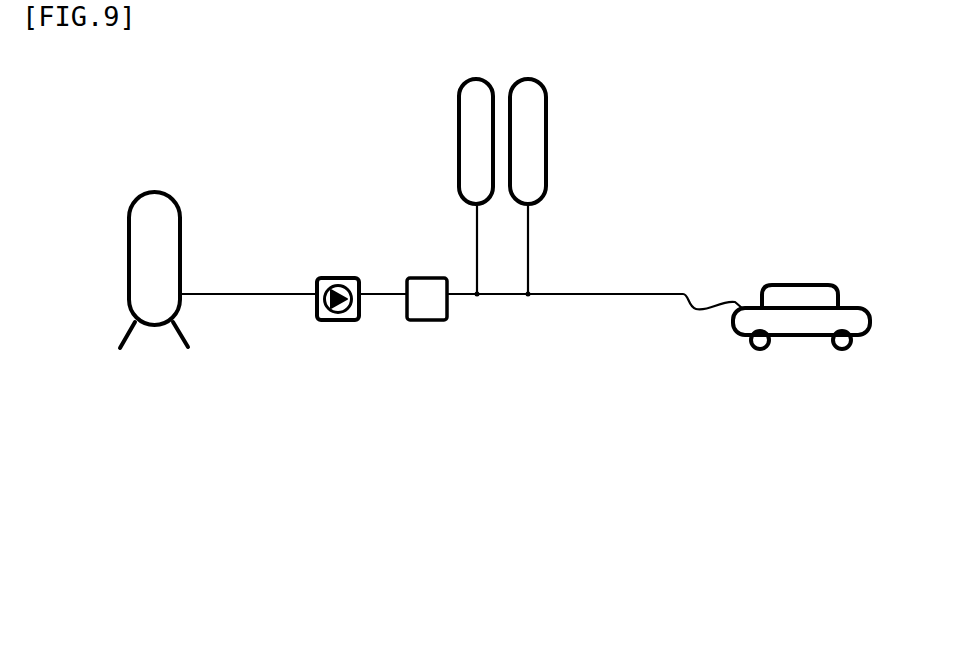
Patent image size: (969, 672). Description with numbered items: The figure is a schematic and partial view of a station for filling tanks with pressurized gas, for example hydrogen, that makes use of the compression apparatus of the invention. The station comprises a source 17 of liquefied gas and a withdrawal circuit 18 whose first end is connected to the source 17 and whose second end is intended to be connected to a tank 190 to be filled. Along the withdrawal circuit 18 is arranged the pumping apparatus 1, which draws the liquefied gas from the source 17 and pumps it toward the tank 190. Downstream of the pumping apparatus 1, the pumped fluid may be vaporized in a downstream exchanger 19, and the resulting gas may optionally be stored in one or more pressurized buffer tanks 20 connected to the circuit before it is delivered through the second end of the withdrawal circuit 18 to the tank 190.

The source of liquefied gas 17 is at (147, 295).
The withdrawal circuit 18 is at (265, 295).
The pumping apparatus 1 is at (338, 321).
The downstream exchanger 19 is at (432, 300).
The pressurized buffer tanks 20 is at (473, 150).
The tank to be filled 190 is at (812, 315).